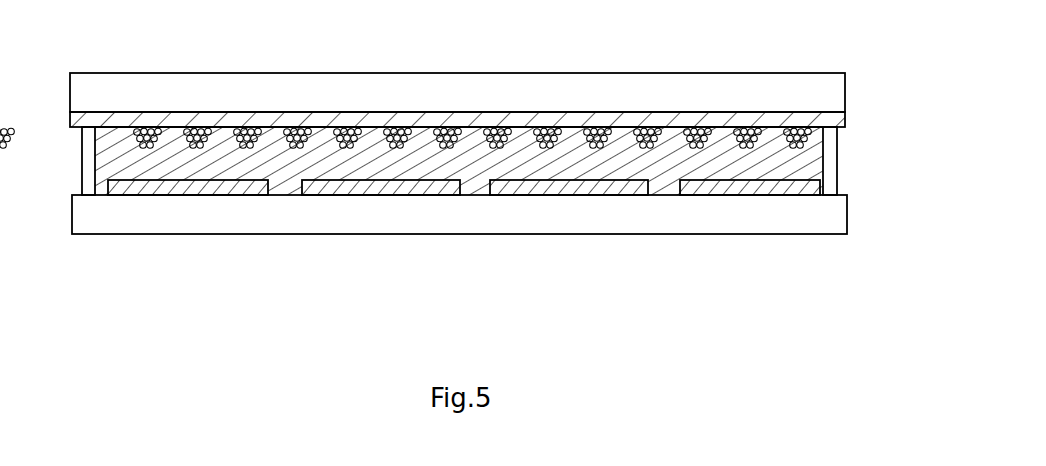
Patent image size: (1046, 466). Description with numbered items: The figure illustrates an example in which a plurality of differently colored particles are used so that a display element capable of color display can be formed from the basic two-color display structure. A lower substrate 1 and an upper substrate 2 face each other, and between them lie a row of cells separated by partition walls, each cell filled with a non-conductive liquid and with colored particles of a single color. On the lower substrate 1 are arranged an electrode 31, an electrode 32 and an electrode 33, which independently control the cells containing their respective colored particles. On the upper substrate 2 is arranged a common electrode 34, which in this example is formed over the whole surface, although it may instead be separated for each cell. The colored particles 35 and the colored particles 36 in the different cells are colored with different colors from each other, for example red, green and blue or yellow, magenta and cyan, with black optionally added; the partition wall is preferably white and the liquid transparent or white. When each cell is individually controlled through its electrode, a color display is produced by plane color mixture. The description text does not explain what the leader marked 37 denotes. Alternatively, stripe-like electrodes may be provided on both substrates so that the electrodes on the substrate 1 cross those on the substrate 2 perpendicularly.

The substrate 1 is at (803, 222).
The substrate 2 is at (817, 88).
The electrode 31 is at (218, 188).
The electrode 32 is at (410, 188).
The electrode 33 is at (590, 188).
The common electrode 34 is at (843, 118).
The colored particles 35 is at (398, 127).
The colored particles 36 is at (607, 127).
The boundary film 37 is at (132, 127).